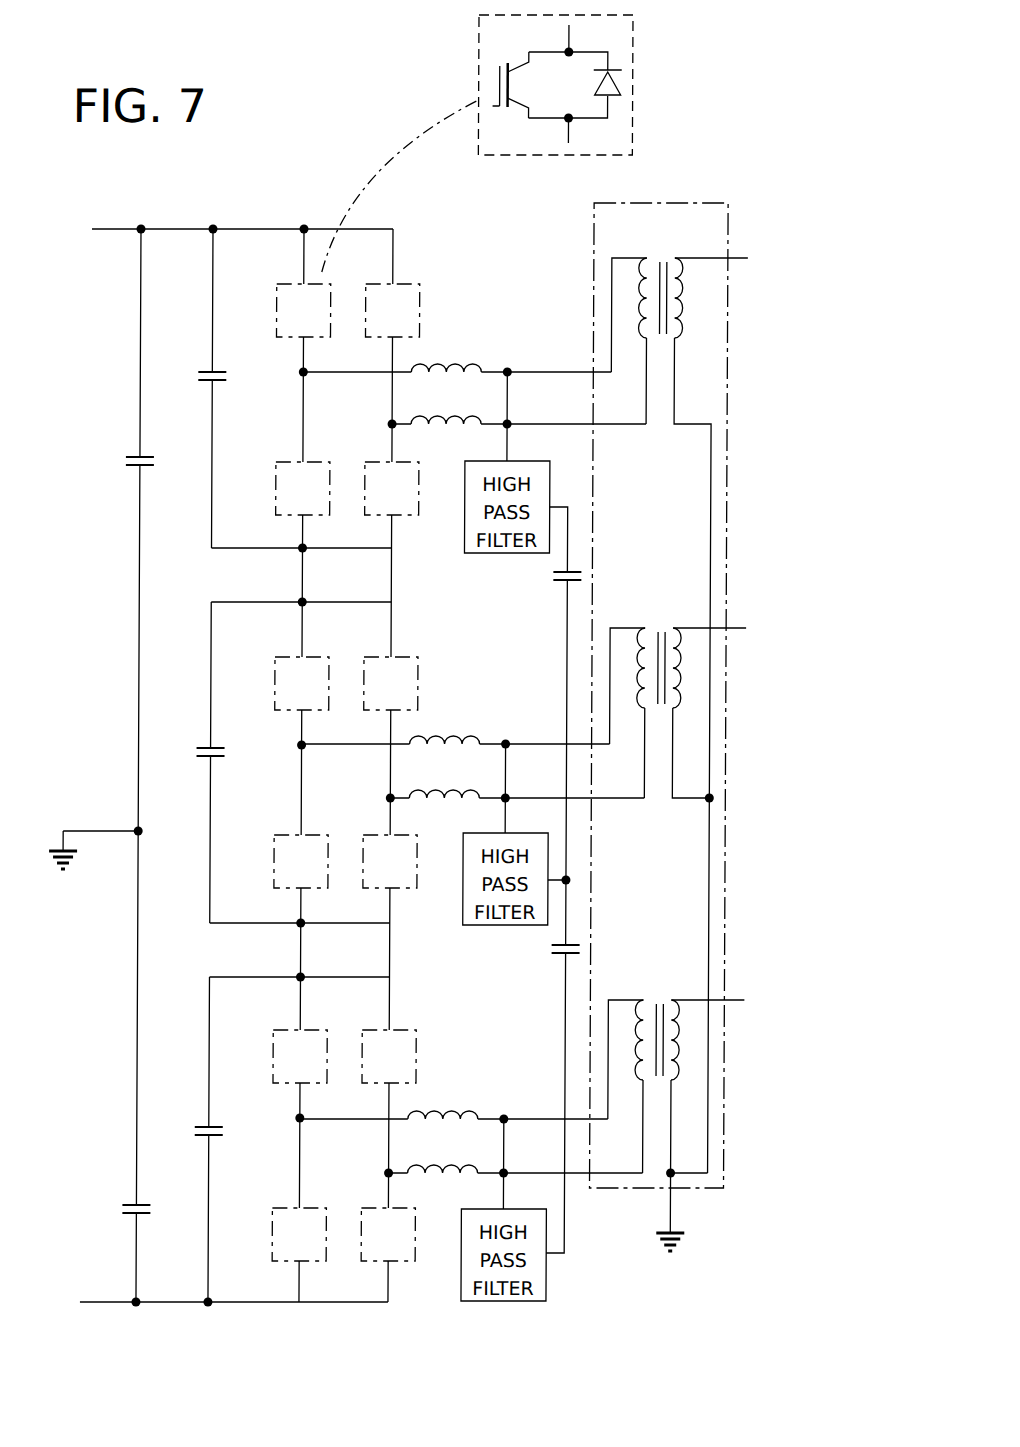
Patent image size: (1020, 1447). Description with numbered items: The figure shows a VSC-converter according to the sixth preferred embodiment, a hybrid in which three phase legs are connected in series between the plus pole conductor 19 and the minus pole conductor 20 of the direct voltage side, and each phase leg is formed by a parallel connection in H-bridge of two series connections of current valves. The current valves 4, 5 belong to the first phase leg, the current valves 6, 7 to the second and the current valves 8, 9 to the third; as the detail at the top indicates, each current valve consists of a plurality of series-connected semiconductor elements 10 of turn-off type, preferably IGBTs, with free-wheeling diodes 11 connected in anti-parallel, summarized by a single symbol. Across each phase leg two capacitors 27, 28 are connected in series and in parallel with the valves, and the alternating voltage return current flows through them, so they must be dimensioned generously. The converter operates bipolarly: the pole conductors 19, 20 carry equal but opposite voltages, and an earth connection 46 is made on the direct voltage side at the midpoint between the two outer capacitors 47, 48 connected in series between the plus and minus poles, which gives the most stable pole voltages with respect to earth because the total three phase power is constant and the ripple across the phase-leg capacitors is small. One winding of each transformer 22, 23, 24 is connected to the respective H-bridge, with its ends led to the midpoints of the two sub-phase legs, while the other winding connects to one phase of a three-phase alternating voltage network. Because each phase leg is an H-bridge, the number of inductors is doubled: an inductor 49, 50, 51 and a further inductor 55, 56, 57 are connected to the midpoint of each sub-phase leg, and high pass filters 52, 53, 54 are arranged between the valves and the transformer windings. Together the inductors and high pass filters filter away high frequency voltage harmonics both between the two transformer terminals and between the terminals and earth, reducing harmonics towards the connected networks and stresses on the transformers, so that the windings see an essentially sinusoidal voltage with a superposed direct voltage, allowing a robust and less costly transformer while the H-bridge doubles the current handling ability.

The current valve 4 is at (278, 304).
The current valve 5 is at (277, 485).
The current valve 6 is at (276, 682).
The current valve 7 is at (276, 860).
The current valve 8 is at (277, 1057).
The current valve 9 is at (277, 1238).
The semiconductor element 10 is at (495, 83).
The free-wheeling diode 11 is at (618, 88).
The pole conductor 19 is at (117, 229).
The pole conductor 20 is at (96, 1302).
The transformer 22 is at (665, 259).
The transformer 23 is at (646, 630).
The transformer 24 is at (641, 1003).
The capacitor 27 is at (558, 570).
The capacitor 28 is at (556, 944).
The earth connection 46 is at (67, 831).
The capacitor 47 is at (135, 455).
The capacitor 48 is at (135, 1205).
The inductor 49 is at (461, 421).
The inductor 50 is at (458, 798).
The inductor 51 is at (454, 1173).
The high pass filter 52 is at (538, 461).
The high pass filter 53 is at (466, 844).
The high pass filter 54 is at (551, 1283).
The inductor 55 is at (460, 364).
The inductor 56 is at (458, 742).
The inductor 57 is at (456, 1117).